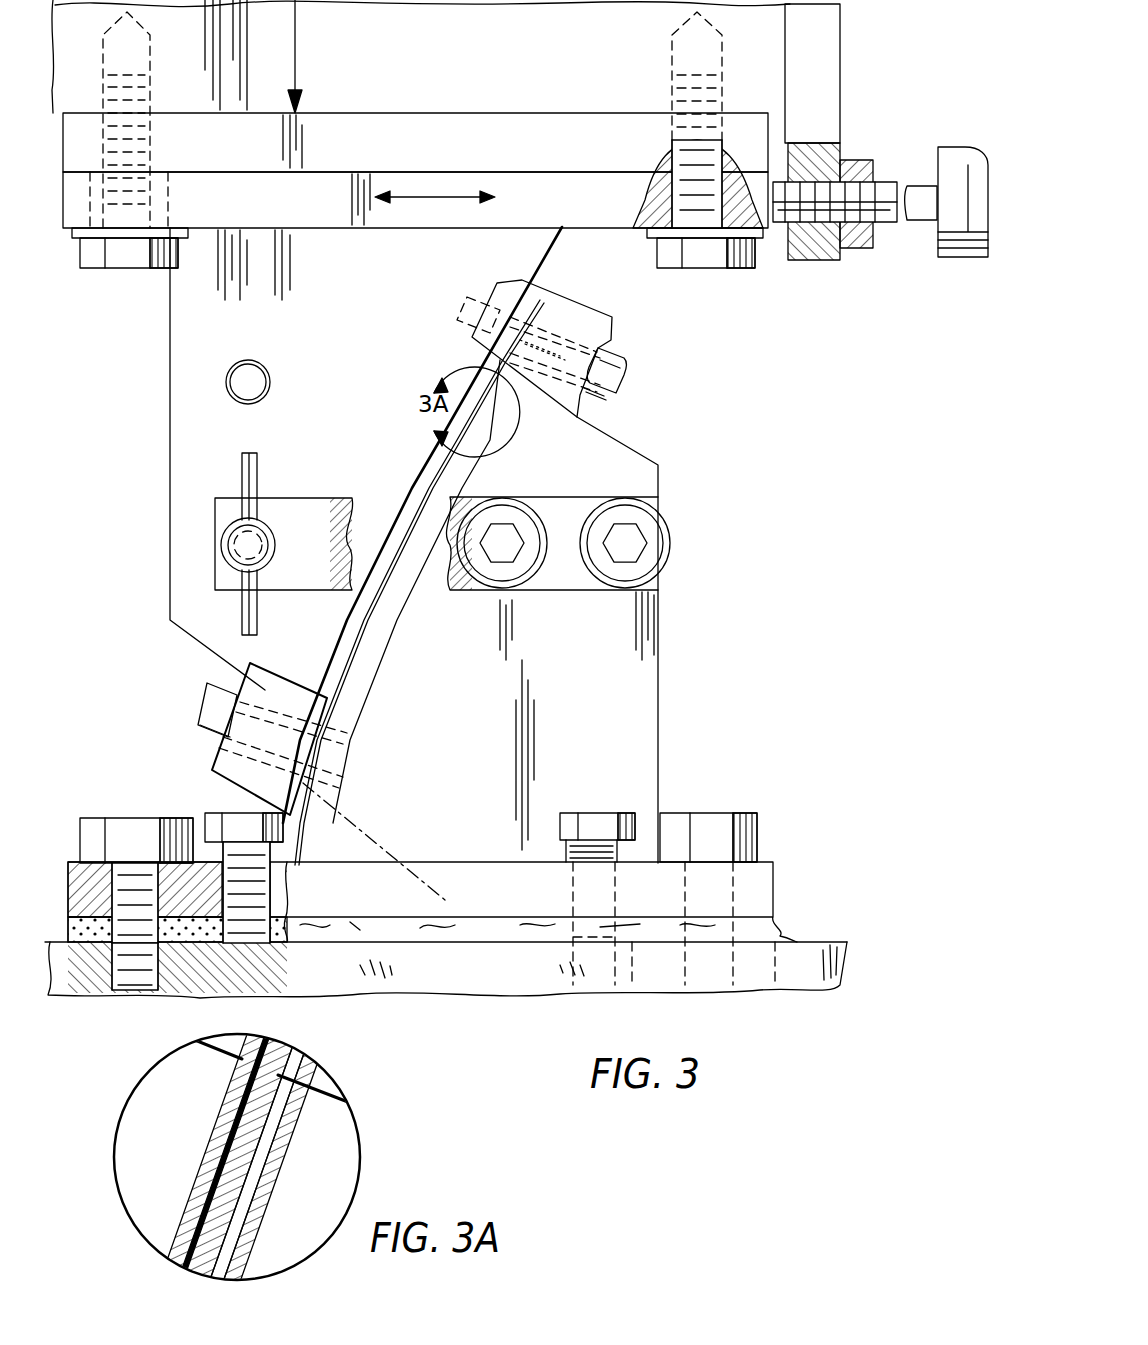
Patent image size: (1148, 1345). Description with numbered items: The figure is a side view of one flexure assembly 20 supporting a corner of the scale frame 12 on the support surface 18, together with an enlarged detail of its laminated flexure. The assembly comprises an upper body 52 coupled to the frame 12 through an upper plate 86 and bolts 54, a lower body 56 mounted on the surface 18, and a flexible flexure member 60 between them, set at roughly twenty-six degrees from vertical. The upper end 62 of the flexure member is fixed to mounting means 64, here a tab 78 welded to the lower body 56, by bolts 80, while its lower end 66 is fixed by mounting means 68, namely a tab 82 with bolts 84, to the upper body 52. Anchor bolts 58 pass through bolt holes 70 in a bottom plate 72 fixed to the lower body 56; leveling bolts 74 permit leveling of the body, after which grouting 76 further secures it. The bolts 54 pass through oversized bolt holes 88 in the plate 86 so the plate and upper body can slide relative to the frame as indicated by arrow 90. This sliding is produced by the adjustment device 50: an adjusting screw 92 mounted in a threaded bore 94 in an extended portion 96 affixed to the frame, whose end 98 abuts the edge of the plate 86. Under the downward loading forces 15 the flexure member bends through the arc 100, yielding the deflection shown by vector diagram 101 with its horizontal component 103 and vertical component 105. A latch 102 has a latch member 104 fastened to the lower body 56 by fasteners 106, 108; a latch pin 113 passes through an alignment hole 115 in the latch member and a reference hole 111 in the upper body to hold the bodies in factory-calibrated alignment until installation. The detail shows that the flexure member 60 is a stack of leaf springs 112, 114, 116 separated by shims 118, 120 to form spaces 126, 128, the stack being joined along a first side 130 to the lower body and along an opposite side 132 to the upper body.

In FIG. 3, the frame 12 is at (452, 154).
In FIG. 3, the downwardly directed loading forces 15 is at (297, 50).
In FIG. 3, the surface 18 is at (498, 975).
In FIG. 3, the flexure assembly 20 is at (777, 452).
In FIG. 3, the adjustment device 50 is at (880, 153).
In FIG. 3, the upper body 52 is at (348, 337).
In FIG. 3, the bolts 54 is at (125, 258).
In FIG. 3, the lower body 56 is at (502, 684).
In FIG. 3, the anchor bolts 58 is at (135, 835).
In FIG. 3, the flexure member 60 is at (448, 546).
In FIG. 3, the upper end 62 is at (553, 280).
In FIG. 3, the mounting means 64 is at (598, 330).
In FIG. 3, the lower end 66 is at (355, 703).
In FIG. 3, the mounting means 68 is at (252, 670).
In FIG. 3, the bolt holes 70 is at (115, 868).
In FIG. 3, the bottom plate 72 is at (172, 805).
In FIG. 3, the leveling bolts 74 is at (240, 830).
In FIG. 3, the grouting 76 is at (158, 990).
In FIG. 3, the tab 78 is at (535, 427).
In FIG. 3, the bolts 80 is at (625, 375).
In FIG. 3, the tab 82 is at (200, 738).
In FIG. 3, the bolts 84 is at (210, 700).
In FIG. 3, the upper plate 86 is at (312, 217).
In FIG. 3, the bolt holes 88 is at (172, 205).
In FIG. 3, the arrow 90 is at (428, 202).
In FIG. 3, the adjusting screw 92 is at (920, 185).
In FIG. 3, the threaded bore 94 is at (815, 222).
In FIG. 3, the extended portion 96 is at (835, 73).
In FIG. 3, the end of screw 98 is at (650, 188).
In FIG. 3, the arc 100 is at (385, 863).
In FIG. 3, the vector diagram 101 is at (452, 940).
In FIG. 3, the latch 102 is at (560, 592).
In FIG. 3, the horizontal component 103 is at (470, 838).
In FIG. 3, the latch member 104 is at (330, 559).
In FIG. 3, the vertical component 105 is at (400, 885).
In FIG. 3, the fastener 106 is at (505, 525).
In FIG. 3, the fastener 108 is at (640, 545).
In FIG. 3, the reference hole 111 is at (228, 538).
In FIG. 3, the latch pin 113 is at (256, 525).
In FIG. 3, the alignment hole 115 is at (258, 572).
In FIG. 3A, the spring 112 is at (213, 1156).
In FIG. 3A, the spring 114 is at (175, 1282).
In FIG. 3A, the spring 116 is at (238, 1164).
In FIG. 3A, the shim 118 is at (268, 1176).
In FIG. 3A, the shim 120 is at (327, 1042).
In FIG. 3A, the space 126 is at (223, 1159).
In FIG. 3A, the space 128 is at (255, 1170).
In FIG. 3, the first side 130 is at (458, 297).
In FIG. 3A, the first side 130 is at (371, 1137).
In FIG. 3, the opposite side 132 is at (370, 767).